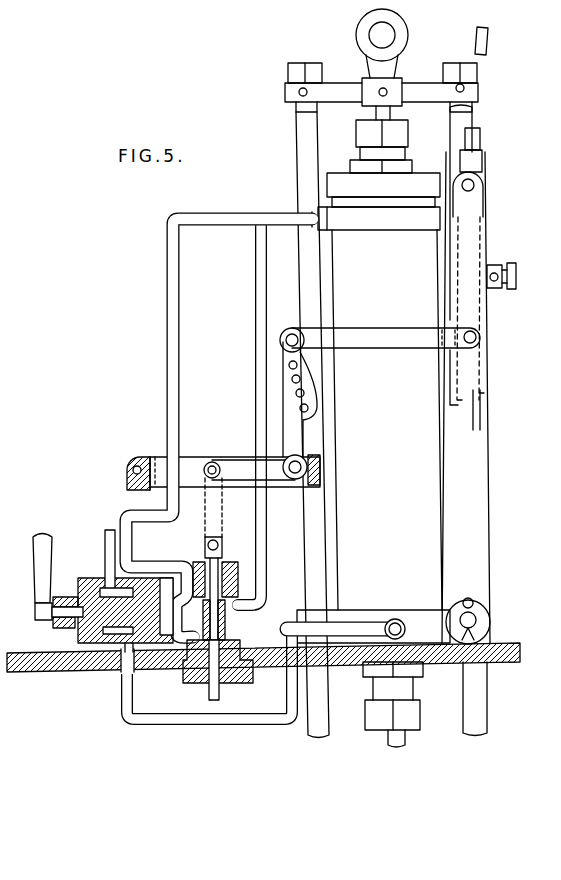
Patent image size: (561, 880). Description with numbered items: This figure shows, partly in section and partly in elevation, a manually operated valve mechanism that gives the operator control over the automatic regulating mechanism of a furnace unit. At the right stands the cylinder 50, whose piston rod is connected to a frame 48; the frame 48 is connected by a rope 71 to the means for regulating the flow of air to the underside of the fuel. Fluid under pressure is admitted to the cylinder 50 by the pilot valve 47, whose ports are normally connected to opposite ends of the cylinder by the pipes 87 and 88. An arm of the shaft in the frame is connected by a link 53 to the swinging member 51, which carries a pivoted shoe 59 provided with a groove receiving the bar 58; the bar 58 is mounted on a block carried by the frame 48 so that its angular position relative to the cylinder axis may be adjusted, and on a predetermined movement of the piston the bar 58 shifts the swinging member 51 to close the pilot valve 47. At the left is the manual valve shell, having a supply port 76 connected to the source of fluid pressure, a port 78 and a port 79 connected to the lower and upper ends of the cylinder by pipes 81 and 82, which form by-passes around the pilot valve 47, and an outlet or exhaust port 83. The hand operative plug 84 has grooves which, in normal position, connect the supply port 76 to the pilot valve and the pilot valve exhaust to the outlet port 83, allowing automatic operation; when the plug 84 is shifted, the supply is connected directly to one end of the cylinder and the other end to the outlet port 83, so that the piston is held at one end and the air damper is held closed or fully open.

The pilot valve 47 is at (245, 574).
The frame 48 is at (297, 180).
The cylinder 50 is at (373, 408).
The swinging member 51 is at (477, 498).
The link 53 is at (395, 322).
The bar 58 is at (480, 135).
The shoe 59 is at (480, 163).
The rope 71 is at (128, 583).
The supply port 76 is at (97, 563).
The port 78 is at (127, 640).
The port 79 is at (78, 636).
The pipe 81 is at (175, 323).
The pipe 82 is at (236, 720).
The outlet port 83 is at (110, 645).
The hand operative plug 84 is at (186, 616).
The pipe 87 is at (257, 382).
The pipe 88 is at (278, 628).